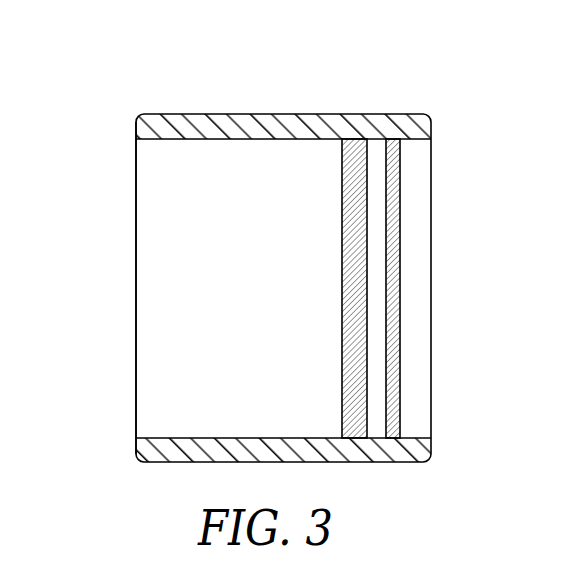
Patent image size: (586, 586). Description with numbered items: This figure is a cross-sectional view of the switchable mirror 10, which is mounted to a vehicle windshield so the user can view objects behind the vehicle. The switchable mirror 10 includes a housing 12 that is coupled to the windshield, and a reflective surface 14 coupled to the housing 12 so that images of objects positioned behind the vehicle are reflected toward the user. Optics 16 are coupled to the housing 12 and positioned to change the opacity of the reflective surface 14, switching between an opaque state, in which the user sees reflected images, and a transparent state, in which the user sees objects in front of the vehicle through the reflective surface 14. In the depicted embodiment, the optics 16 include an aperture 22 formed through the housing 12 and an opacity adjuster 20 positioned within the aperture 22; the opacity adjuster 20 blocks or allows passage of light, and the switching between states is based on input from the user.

The switchable mirror 10 is at (145, 94).
The housing 12 is at (268, 108).
The reflective surface 14 is at (400, 177).
The optics 16 is at (120, 198).
The opacity adjuster 20 is at (333, 178).
The aperture 22 is at (298, 289).